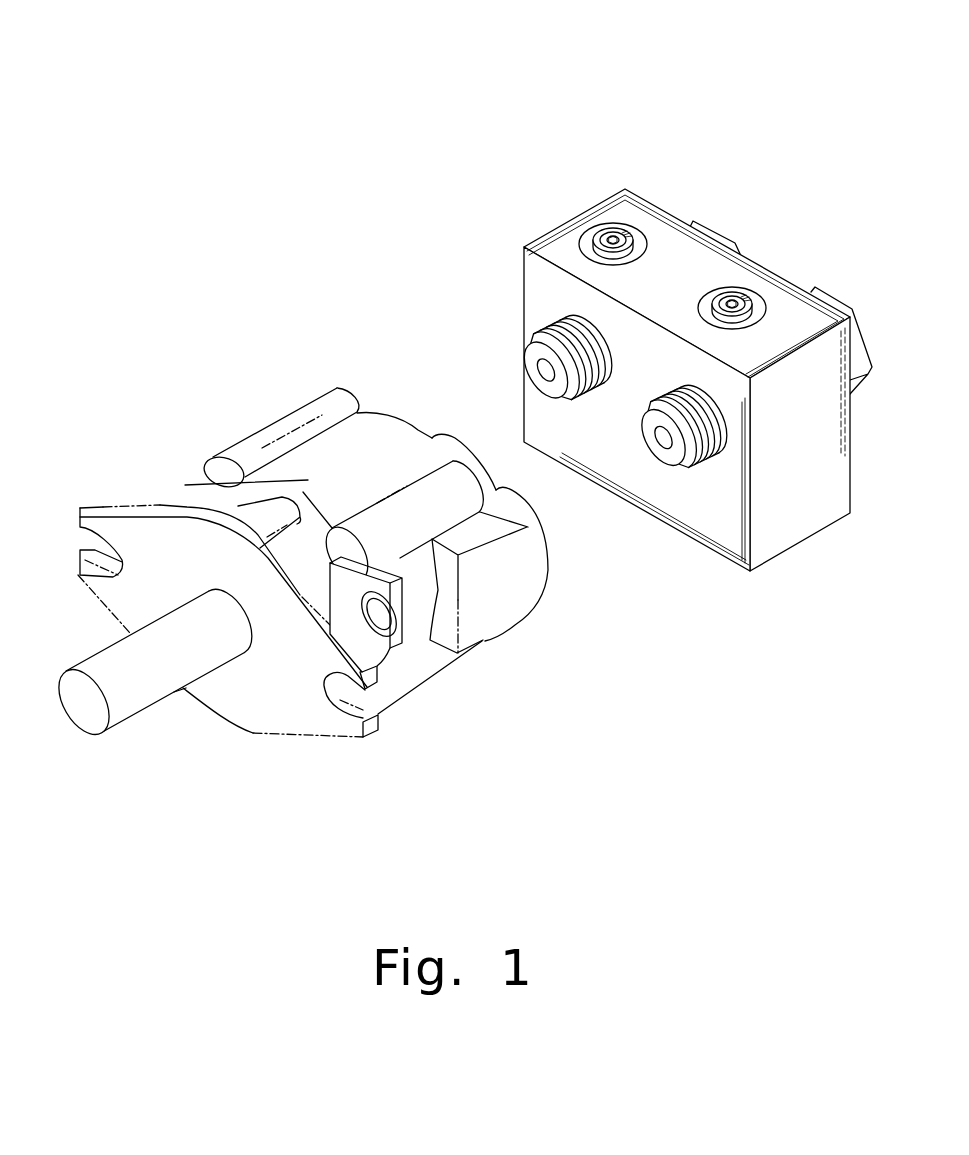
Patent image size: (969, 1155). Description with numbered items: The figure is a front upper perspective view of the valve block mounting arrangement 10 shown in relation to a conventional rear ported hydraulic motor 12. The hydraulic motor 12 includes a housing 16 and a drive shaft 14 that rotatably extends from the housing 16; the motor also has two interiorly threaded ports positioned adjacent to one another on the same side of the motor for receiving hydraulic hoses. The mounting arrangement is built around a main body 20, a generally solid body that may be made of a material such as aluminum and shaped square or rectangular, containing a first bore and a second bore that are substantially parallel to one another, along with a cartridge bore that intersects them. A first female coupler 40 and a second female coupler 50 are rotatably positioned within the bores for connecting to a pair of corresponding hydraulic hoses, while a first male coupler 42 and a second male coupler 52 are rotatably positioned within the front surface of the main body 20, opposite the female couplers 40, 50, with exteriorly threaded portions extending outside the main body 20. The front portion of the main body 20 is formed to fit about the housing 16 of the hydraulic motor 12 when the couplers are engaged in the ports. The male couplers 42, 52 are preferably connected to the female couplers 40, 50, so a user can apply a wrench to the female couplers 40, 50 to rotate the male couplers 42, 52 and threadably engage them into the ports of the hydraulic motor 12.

The valve block mounting arrangement 10 is at (350, 108).
The hydraulic motor 12 is at (266, 393).
The drive shaft 14 is at (147, 683).
The housing 16 is at (188, 475).
The main body 20 is at (790, 517).
The first female coupler 40 is at (713, 230).
The first male coupler 42 is at (542, 368).
The second female coupler 50 is at (852, 316).
The second male coupler 52 is at (663, 450).